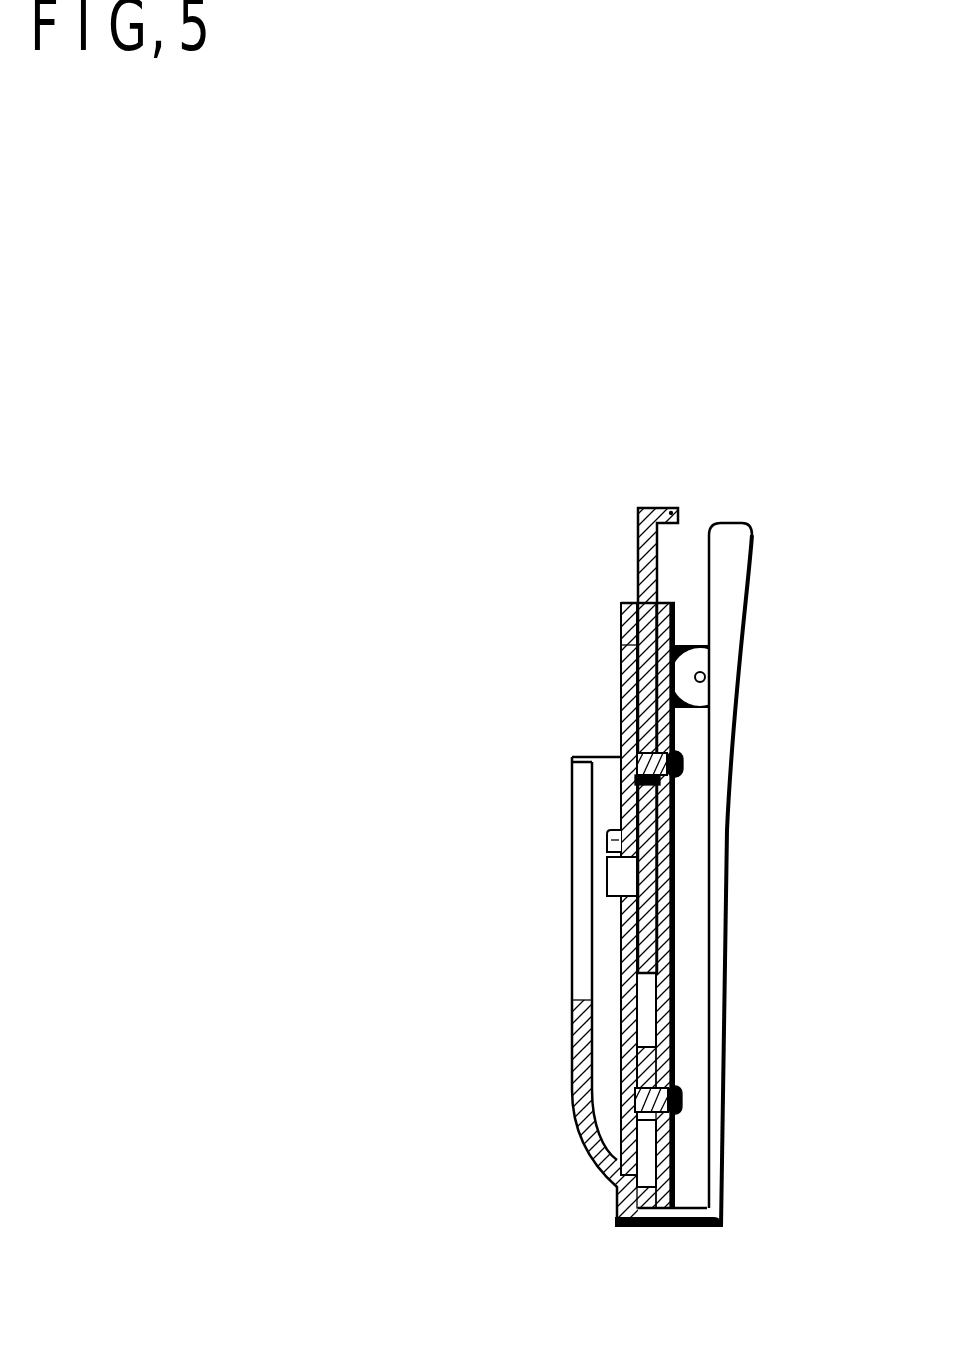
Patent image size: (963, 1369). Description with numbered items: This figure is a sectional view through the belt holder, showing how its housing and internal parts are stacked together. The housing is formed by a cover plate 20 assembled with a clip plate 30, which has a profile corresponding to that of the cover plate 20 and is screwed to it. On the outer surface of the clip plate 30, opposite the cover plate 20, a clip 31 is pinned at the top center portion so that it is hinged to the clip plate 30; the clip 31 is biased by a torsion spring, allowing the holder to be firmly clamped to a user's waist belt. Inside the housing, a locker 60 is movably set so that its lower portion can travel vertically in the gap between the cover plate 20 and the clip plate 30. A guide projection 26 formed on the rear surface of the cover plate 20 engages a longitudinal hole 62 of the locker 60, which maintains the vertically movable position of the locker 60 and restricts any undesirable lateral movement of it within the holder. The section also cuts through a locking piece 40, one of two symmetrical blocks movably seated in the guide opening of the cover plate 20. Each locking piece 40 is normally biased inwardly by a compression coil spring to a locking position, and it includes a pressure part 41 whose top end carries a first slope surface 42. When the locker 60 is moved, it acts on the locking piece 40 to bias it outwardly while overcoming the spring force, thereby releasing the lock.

The cover plate 20 is at (583, 1151).
The guide projection 26 is at (620, 727).
The clip plate 30 is at (684, 868).
The clip 31 is at (727, 1033).
The locking piece 40 is at (598, 894).
The pressure part 41 is at (607, 873).
The first slope surface 42 is at (607, 832).
The locker 60 is at (638, 552).
The longitudinal hole 62 is at (620, 705).